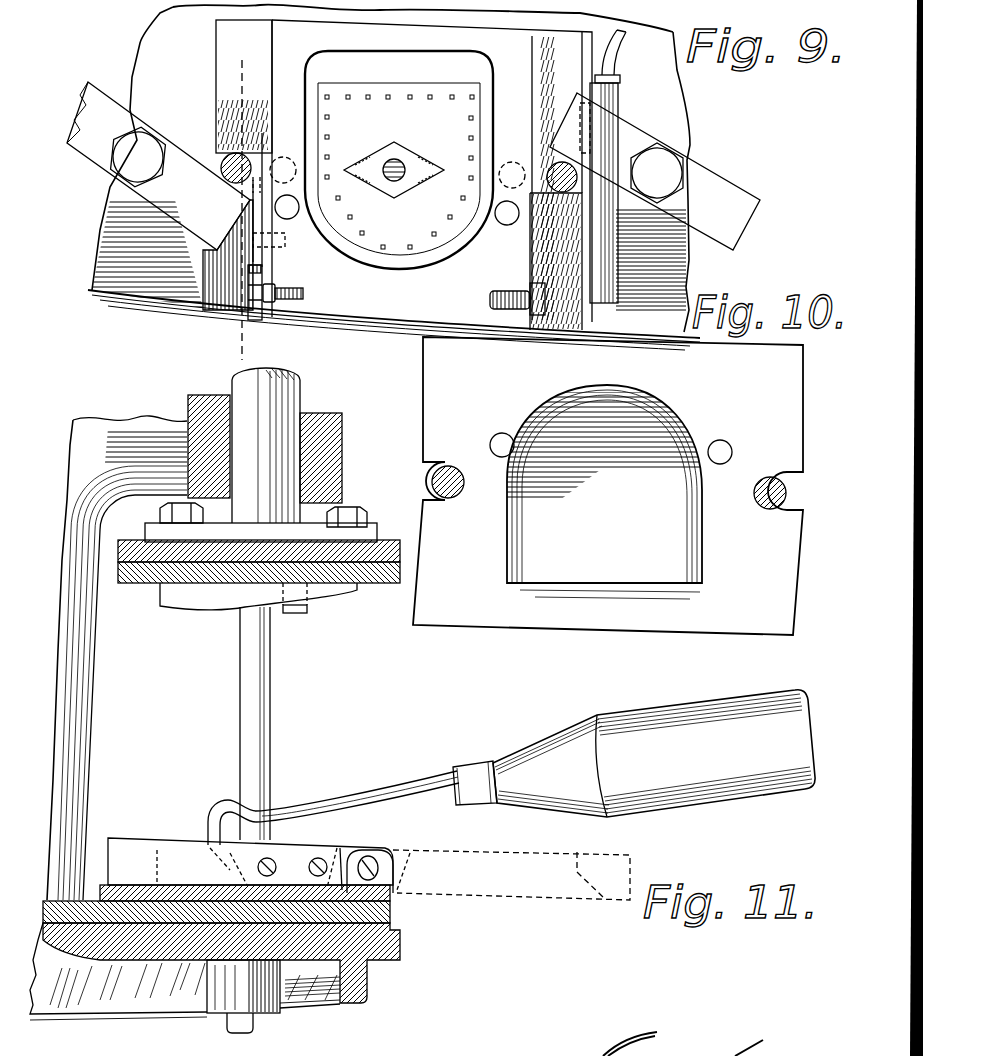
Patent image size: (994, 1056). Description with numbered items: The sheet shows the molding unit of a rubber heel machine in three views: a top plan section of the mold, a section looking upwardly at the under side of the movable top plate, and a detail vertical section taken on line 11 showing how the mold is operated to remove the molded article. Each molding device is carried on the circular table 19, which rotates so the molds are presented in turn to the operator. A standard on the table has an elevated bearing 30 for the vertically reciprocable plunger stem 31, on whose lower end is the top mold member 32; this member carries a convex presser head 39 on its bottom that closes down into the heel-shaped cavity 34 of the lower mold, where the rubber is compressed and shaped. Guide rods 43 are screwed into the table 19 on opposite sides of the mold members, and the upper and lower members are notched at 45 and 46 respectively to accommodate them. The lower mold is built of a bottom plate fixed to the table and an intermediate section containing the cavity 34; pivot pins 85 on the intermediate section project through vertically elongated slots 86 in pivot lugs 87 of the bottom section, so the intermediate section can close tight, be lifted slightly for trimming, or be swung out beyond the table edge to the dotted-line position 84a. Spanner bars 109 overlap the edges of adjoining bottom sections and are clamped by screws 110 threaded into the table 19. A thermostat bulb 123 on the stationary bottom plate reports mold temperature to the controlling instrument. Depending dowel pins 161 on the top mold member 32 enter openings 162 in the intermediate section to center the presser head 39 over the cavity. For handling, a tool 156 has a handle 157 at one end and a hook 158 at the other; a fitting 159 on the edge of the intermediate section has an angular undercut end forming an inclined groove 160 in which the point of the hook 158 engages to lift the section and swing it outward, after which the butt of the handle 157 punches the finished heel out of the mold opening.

In FIG. 9, the circular table 19 is at (140, 282).
In FIG. 11, the circular table 19 is at (72, 997).
In FIG. 11, the elevated bearing 30 is at (200, 403).
In FIG. 11, the plunger stem 31 is at (285, 396).
In FIG. 11, the top mold member 32 is at (356, 496).
In FIG. 9, the mold cavity 34 is at (398, 127).
In FIG. 10, the convex presser head 39 is at (707, 568).
In FIG. 11, the convex presser head 39 is at (197, 600).
In FIG. 9, the guide rods 43 is at (575, 167).
In FIG. 10, the guide rods 43 is at (452, 464).
In FIG. 11, the guide rods 43 is at (240, 645).
In FIG. 10, the notch 45 is at (428, 493).
In FIG. 9, the notch 46 is at (221, 164).
In FIG. 11, the swung-out position of intermediate mold section 84a is at (527, 900).
In FIG. 11, the pivot pins 85 is at (375, 877).
In FIG. 11, the vertically elongated slots 86 is at (368, 857).
In FIG. 9, the pivot lugs 87 is at (253, 310).
In FIG. 11, the pivot lugs 87 is at (383, 862).
In FIG. 9, the spanner bars 109 is at (102, 110).
In FIG. 9, the screws 110 is at (128, 165).
In FIG. 9, the thermostat bulb 123 is at (614, 88).
In FIG. 11, the tool 156 is at (470, 767).
In FIG. 11, the handle 157 is at (675, 718).
In FIG. 11, the hook 158 is at (221, 805).
In FIG. 9, the fitting 159 is at (253, 207).
In FIG. 11, the fitting 159 is at (282, 844).
In FIG. 9, the inclined groove 160 is at (262, 133).
In FIG. 11, the inclined groove 160 is at (210, 847).
In FIG. 10, the dowel pins 161 is at (502, 433).
In FIG. 11, the dowel pins 161 is at (297, 613).
In FIG. 9, the openings 162 is at (287, 219).
In FIG. 9, the section line 11 is at (248, 43).